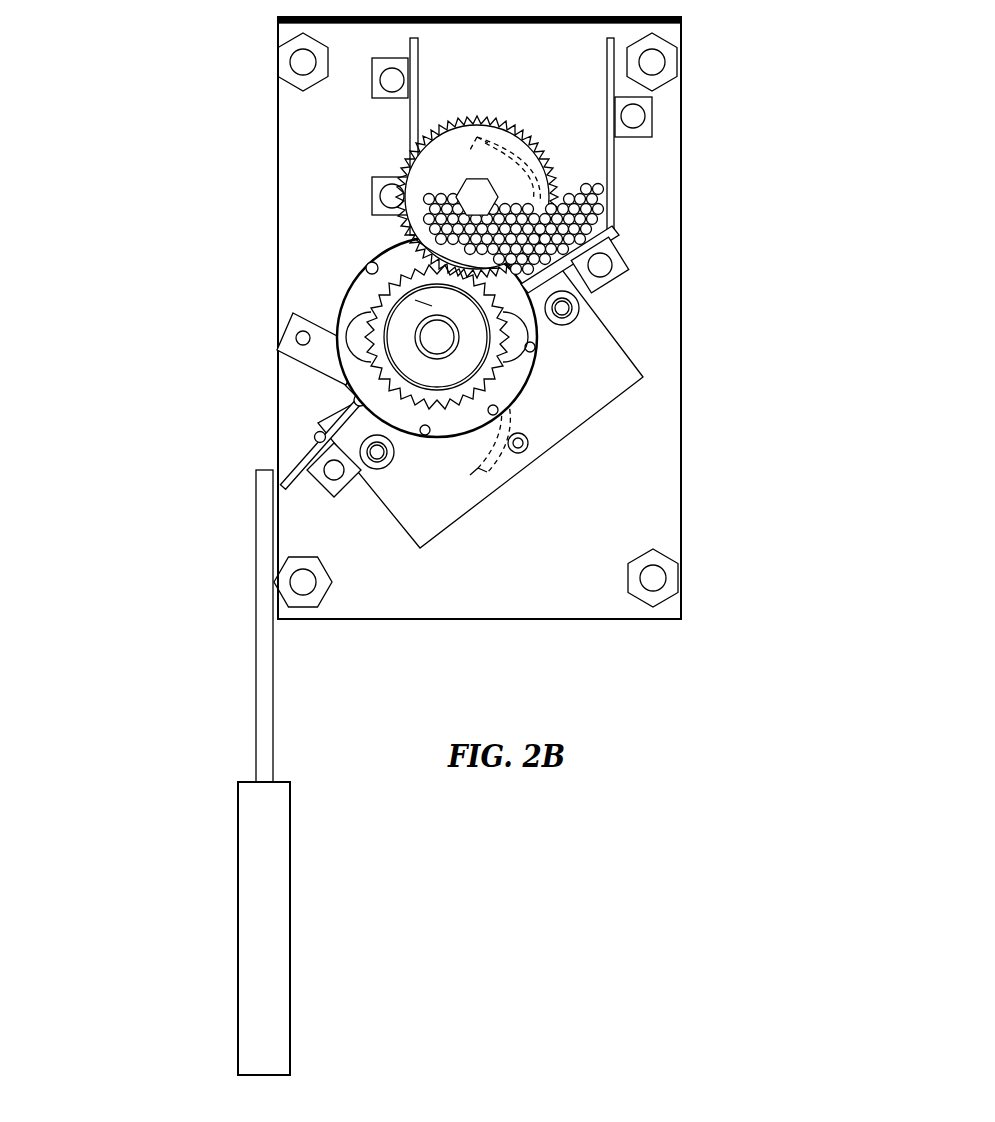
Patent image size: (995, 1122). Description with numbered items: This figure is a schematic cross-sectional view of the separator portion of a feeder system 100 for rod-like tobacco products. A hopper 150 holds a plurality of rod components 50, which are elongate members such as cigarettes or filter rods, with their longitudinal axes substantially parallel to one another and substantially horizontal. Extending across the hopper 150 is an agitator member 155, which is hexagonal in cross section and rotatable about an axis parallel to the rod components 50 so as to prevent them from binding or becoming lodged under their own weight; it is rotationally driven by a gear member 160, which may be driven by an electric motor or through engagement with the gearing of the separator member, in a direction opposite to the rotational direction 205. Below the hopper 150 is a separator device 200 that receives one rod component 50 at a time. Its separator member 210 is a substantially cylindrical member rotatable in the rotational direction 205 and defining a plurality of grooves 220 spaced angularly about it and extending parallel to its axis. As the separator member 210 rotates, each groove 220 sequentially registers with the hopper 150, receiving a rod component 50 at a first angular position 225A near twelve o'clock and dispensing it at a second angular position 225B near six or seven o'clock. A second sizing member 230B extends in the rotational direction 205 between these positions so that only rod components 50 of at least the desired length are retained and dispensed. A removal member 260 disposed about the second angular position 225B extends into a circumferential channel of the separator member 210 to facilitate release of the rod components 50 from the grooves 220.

The feeder system 100 is at (165, 226).
The hopper 150 is at (413, 105).
The agitator member 155 is at (460, 190).
The gear member 160 is at (407, 158).
The rod components 50 is at (585, 162).
The separator device 200 is at (640, 314).
The rotational direction 205 is at (497, 473).
The separator member 210 is at (537, 323).
The groove 220 is at (375, 255).
The first angular position 225A is at (417, 293).
The second angular position 225B is at (378, 402).
The second sizing member 230B is at (620, 365).
The removal member 260 is at (325, 353).